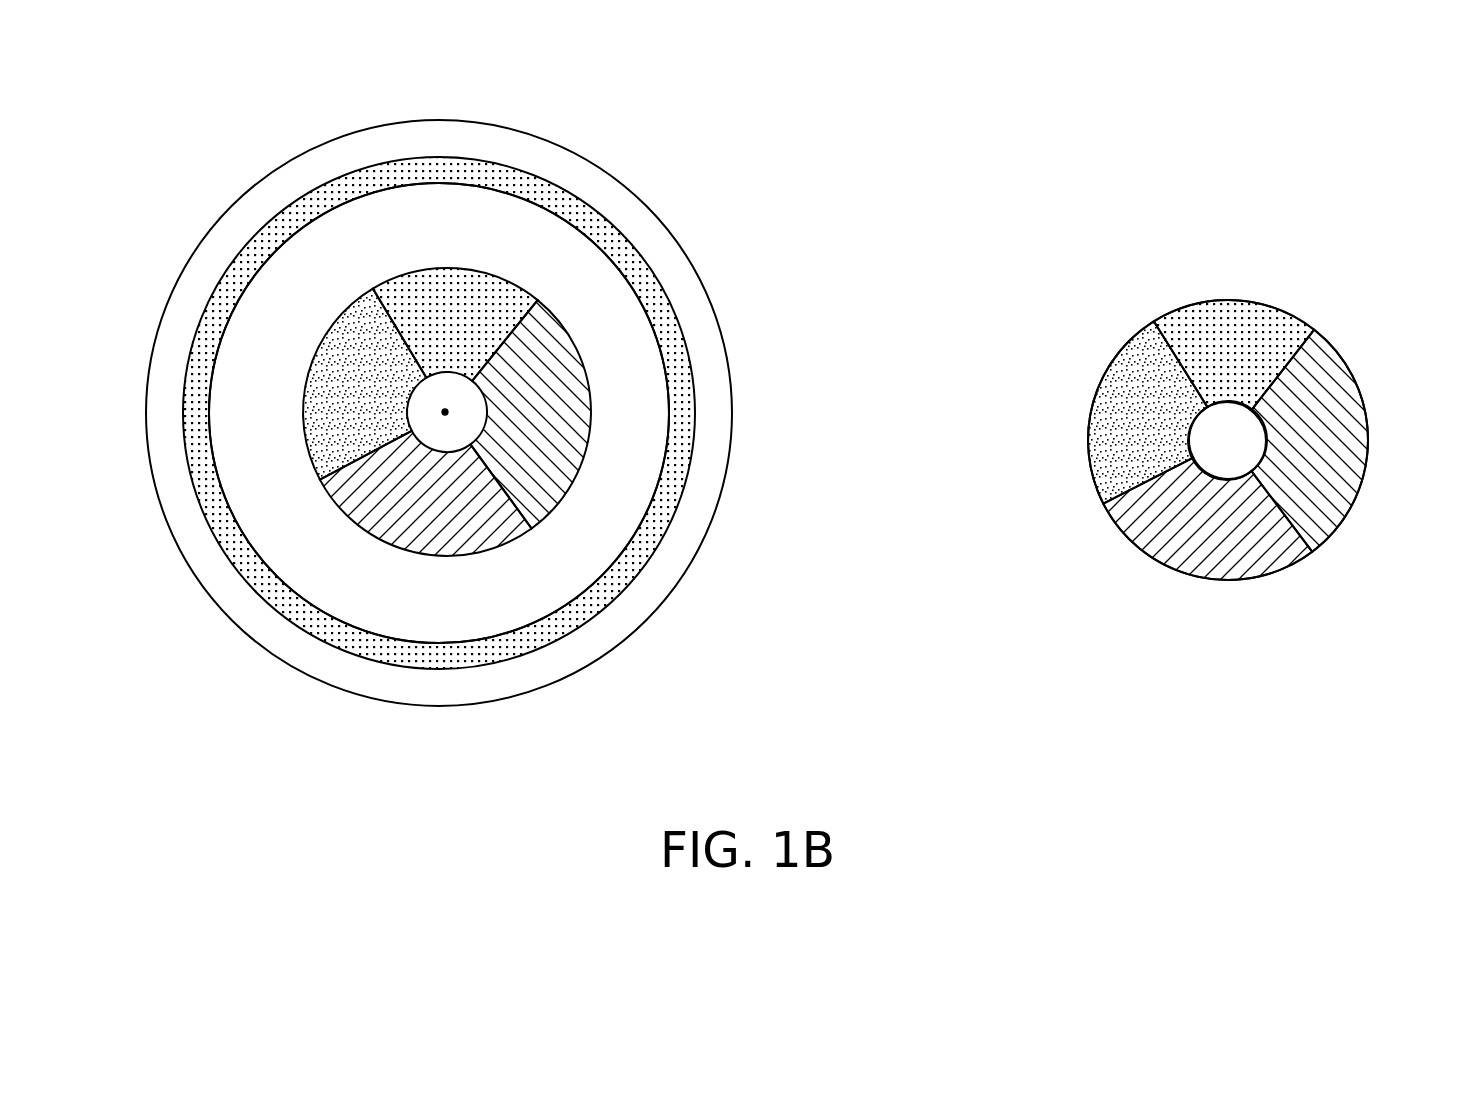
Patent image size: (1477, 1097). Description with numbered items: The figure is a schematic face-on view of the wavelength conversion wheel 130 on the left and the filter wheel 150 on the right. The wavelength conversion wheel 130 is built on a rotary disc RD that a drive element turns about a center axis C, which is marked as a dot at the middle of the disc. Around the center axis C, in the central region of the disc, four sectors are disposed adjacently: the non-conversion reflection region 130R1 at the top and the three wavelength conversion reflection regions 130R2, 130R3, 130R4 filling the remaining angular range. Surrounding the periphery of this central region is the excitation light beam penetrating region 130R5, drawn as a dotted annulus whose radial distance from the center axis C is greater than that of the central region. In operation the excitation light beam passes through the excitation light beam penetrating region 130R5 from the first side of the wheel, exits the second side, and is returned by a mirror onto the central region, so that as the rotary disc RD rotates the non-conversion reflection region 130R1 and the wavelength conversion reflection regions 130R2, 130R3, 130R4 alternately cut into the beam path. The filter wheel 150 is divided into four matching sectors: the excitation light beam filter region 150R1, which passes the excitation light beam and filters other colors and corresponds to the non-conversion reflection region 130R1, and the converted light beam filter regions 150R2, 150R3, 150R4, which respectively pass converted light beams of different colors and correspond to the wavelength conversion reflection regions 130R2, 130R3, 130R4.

The wavelength conversion wheel 130 is at (504, 781).
The non-conversion reflection region 130R1 is at (460, 294).
The wavelength conversion reflection region 130R2 is at (353, 357).
The wavelength conversion reflection region 130R3 is at (412, 517).
The wavelength conversion reflection region 130R4 is at (555, 428).
The excitation light beam penetrating region 130R5 is at (646, 276).
The rotary disc RD is at (410, 627).
The center axis C is at (445, 412).
The filter wheel 150 is at (1305, 725).
The excitation light beam filter region 150R1 is at (1237, 318).
The converted light beam filter region 150R2 is at (1138, 402).
The converted light beam filter region 150R3 is at (1218, 547).
The converted light beam filter region 150R4 is at (1323, 495).